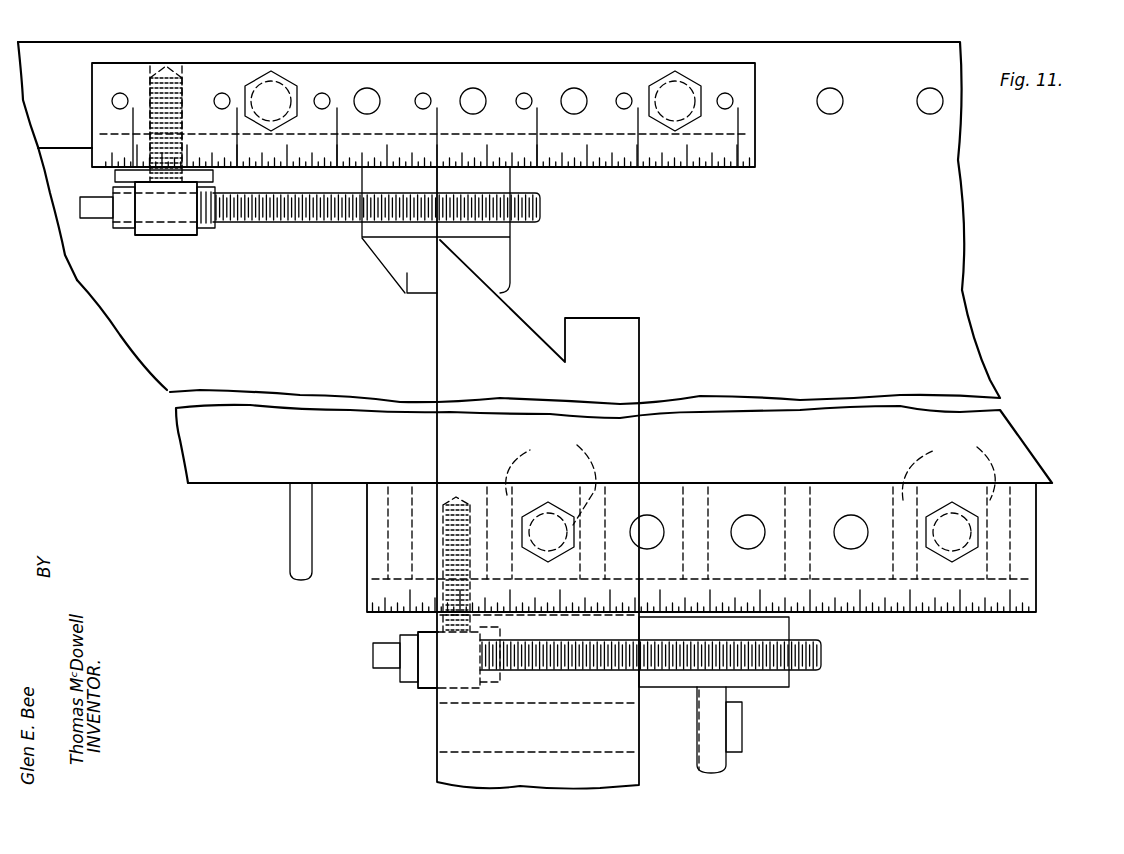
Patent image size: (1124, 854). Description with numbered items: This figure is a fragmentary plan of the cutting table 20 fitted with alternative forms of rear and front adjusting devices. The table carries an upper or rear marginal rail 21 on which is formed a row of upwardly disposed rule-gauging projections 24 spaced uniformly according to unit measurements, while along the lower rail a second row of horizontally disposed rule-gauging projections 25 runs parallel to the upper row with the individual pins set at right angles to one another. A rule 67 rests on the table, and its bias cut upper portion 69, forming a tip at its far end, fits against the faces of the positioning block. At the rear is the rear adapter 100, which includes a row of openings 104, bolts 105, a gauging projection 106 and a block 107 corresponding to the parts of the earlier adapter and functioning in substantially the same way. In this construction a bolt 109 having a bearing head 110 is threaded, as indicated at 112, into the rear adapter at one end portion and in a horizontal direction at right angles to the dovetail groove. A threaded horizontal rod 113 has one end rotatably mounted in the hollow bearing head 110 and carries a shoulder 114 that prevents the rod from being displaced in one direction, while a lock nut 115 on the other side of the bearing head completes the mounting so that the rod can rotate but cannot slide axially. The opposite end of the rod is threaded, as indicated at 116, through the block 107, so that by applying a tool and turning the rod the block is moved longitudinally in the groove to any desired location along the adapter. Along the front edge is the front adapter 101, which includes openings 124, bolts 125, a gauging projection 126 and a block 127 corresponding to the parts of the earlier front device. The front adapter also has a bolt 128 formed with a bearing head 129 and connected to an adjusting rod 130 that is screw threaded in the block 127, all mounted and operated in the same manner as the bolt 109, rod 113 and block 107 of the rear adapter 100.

The table 20 is at (215, 486).
The upper marginal rail 21 is at (903, 133).
The rule-gauging projections 24 is at (833, 96).
The rule-gauging projections 25 is at (367, 552).
The rule 67 is at (640, 340).
The bias cut upper portion 69 is at (453, 285).
The rear adapter 100 is at (682, 62).
The front adapter 101 is at (1000, 614).
The openings 104 is at (528, 98).
The bolts 105 is at (280, 80).
The gauging projection 106 is at (405, 295).
The block 107 is at (512, 180).
The bolt 109 is at (160, 68).
The bearing head 110 is at (177, 233).
The threaded portion 112 is at (187, 93).
The threaded horizontal rod 113 is at (540, 221).
The shoulder 114 is at (78, 281).
The lock nut 115 is at (208, 226).
The threaded portion 116 is at (407, 215).
The openings 124 is at (751, 478).
The bolts 125 is at (575, 525).
The gauging projection 126 is at (728, 765).
The block 127 is at (791, 633).
The bolt 128 is at (460, 500).
The bearing head 129 is at (417, 688).
The adjusting rod 130 is at (583, 670).